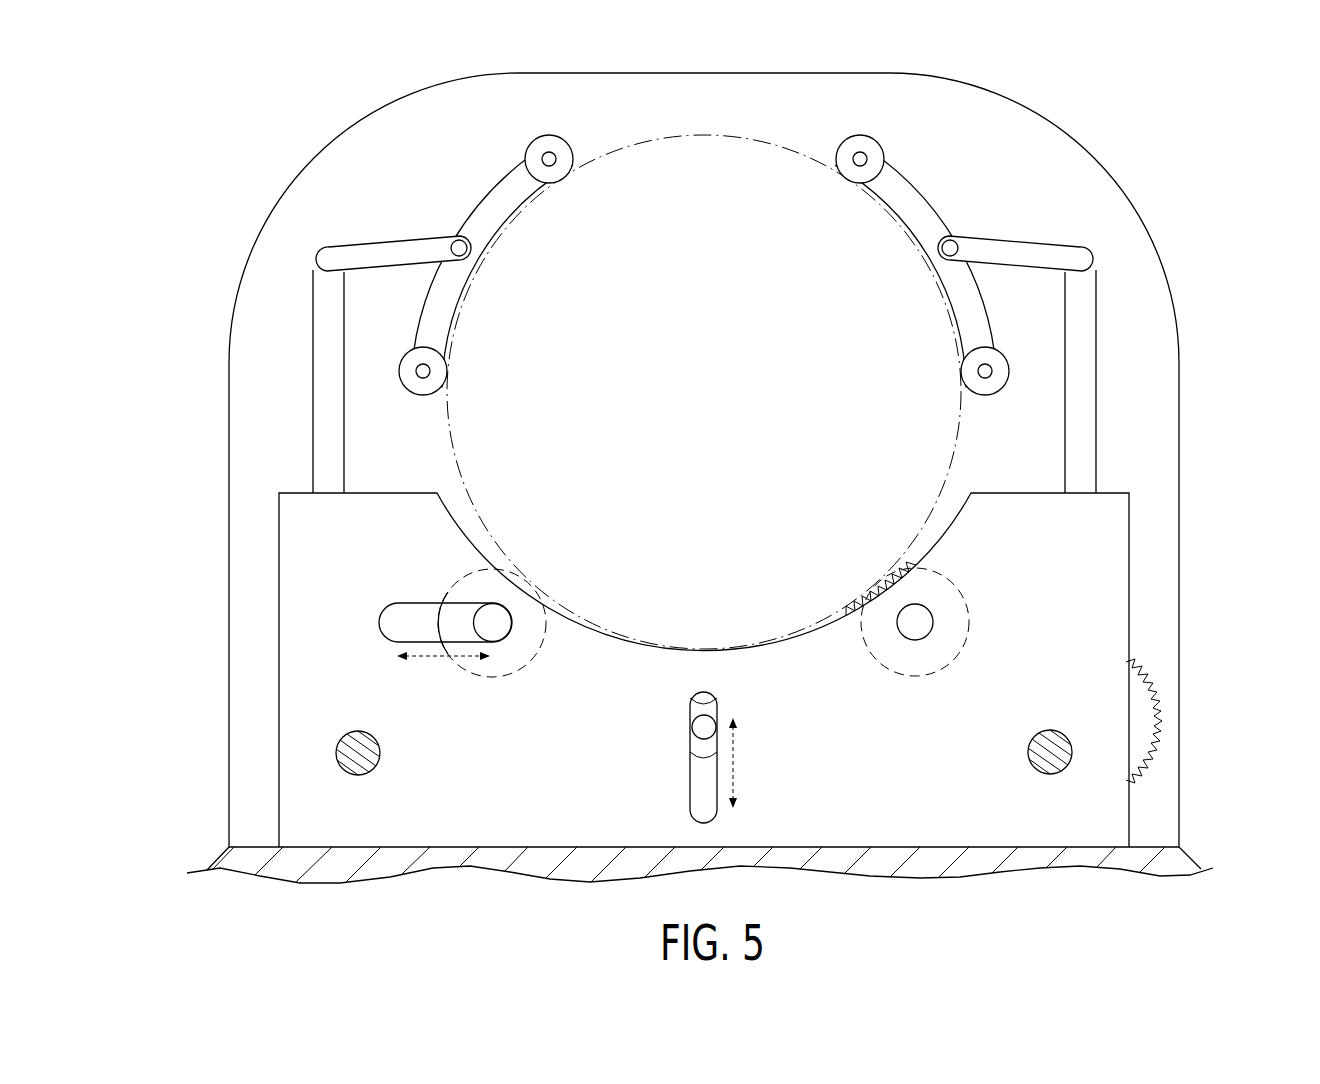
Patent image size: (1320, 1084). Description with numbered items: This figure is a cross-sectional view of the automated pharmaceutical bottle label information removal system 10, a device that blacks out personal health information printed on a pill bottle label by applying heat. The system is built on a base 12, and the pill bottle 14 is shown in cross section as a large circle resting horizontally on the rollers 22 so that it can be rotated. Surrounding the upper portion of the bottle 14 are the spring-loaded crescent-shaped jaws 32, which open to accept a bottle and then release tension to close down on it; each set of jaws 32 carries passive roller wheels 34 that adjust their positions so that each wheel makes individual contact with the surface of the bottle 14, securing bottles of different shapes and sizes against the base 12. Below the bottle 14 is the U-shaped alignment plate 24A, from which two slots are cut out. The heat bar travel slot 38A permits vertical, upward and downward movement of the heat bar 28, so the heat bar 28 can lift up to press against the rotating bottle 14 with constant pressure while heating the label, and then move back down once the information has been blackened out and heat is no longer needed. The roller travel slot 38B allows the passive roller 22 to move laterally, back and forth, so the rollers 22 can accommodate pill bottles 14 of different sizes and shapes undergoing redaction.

The automated pharmaceutical bottle label information removal system 10 is at (213, 89).
The base 12 is at (1090, 847).
The pharmaceutical bottle 14 is at (703, 137).
The roller 22 is at (455, 612).
The alignment plate 24A is at (1100, 590).
The heat bar 28 is at (700, 748).
The spring-loaded crescent-shaped jaws 32 is at (455, 168).
The passive roller wheels 34 is at (566, 151).
The heat bar travel slot 38A is at (700, 783).
The roller travel slot 38B is at (413, 615).